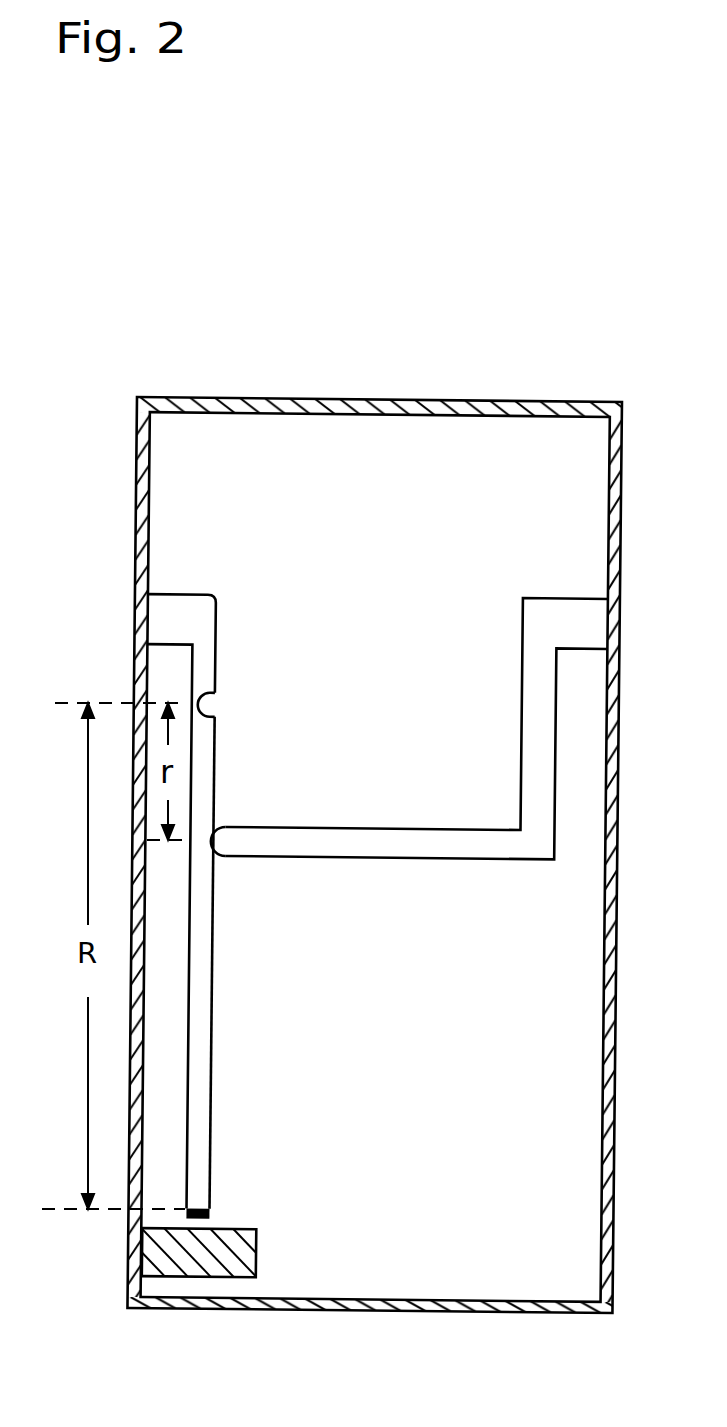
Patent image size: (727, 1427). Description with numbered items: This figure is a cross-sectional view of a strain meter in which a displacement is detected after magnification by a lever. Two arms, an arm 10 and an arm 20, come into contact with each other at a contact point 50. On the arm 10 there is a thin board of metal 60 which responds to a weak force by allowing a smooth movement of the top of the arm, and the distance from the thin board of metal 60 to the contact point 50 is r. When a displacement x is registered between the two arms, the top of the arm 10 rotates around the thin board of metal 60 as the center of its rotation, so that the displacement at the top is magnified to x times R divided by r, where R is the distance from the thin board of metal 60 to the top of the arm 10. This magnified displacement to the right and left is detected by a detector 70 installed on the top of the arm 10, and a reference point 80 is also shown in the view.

The arm 10 is at (183, 612).
The arm 20 is at (491, 845).
The contact point 50 is at (228, 865).
The thin board of metal 60 is at (207, 705).
The detector 70 is at (214, 1211).
The reference point 80 is at (183, 1258).